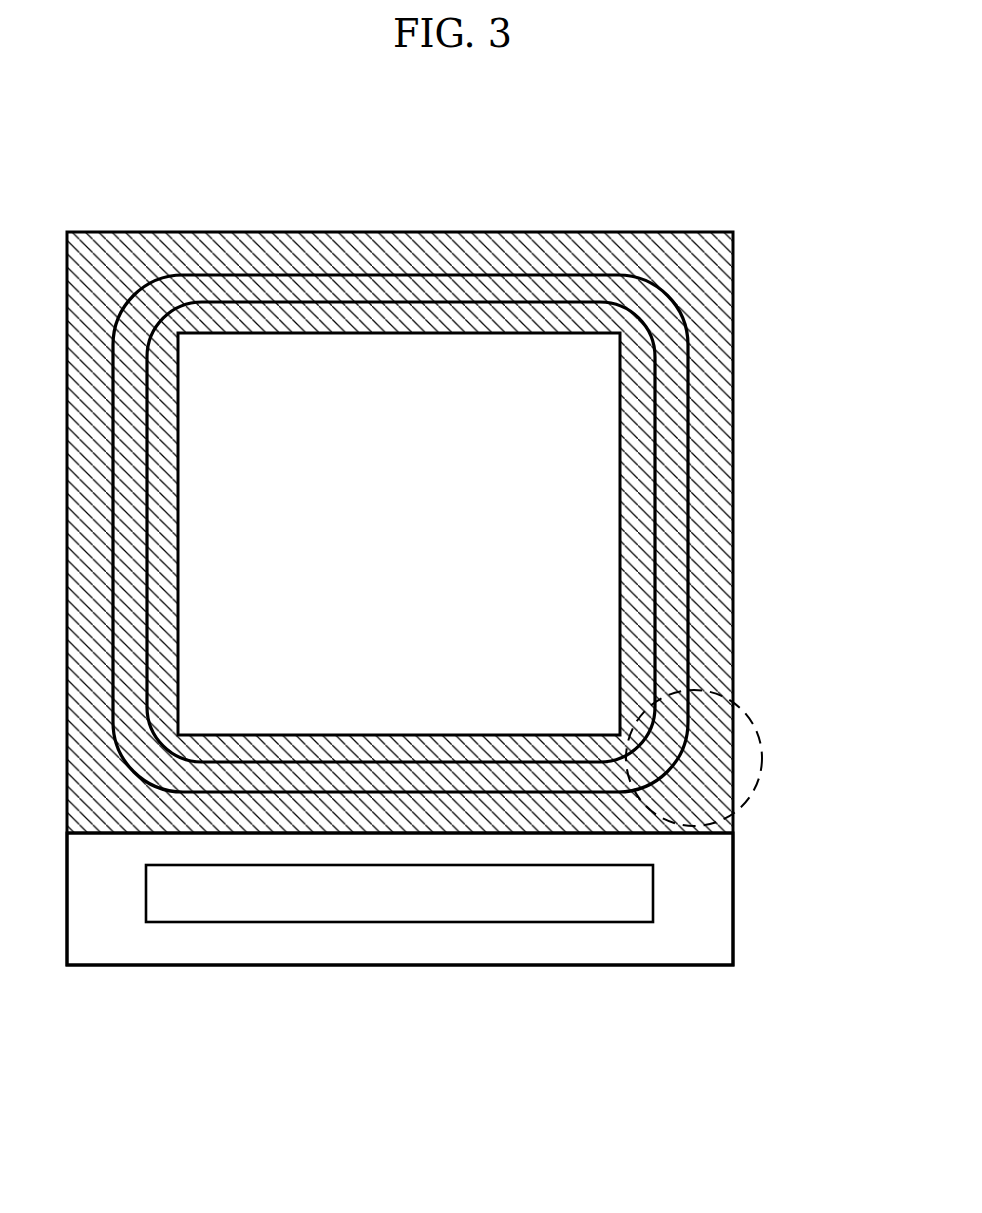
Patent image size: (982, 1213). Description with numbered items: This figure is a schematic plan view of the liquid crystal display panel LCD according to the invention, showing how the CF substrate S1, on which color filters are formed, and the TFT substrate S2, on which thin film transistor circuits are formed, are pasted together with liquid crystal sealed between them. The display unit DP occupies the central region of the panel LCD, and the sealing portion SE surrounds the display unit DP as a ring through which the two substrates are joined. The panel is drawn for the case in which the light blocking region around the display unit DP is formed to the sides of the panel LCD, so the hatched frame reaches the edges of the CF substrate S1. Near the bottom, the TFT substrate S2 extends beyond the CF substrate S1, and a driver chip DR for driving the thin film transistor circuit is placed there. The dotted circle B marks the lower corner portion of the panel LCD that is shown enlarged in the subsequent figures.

The liquid crystal display panel LCD is at (404, 228).
The display unit DP is at (570, 445).
The CF substrate S1 is at (707, 555).
The sealing portion SE is at (667, 665).
The dotted circle B is at (704, 758).
The driver chip DR is at (403, 887).
The TFT substrate S2 is at (698, 886).